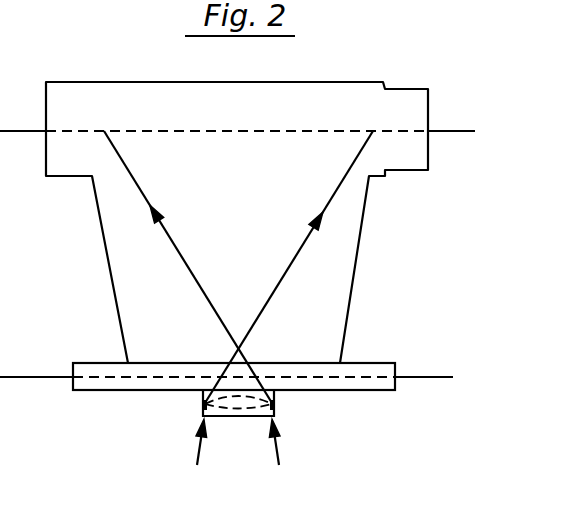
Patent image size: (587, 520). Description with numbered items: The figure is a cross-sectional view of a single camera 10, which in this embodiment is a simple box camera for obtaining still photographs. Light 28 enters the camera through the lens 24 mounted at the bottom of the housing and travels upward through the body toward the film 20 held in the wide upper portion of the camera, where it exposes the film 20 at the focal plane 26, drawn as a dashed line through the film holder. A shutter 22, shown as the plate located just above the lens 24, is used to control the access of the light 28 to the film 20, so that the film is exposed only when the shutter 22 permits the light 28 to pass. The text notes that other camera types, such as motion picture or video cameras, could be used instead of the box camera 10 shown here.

The camera 10 is at (333, 102).
The film 20 is at (445, 131).
The shutter 22 is at (423, 377).
The lens 24 is at (243, 404).
The focal plane 26 is at (290, 133).
The light 28 is at (177, 255).